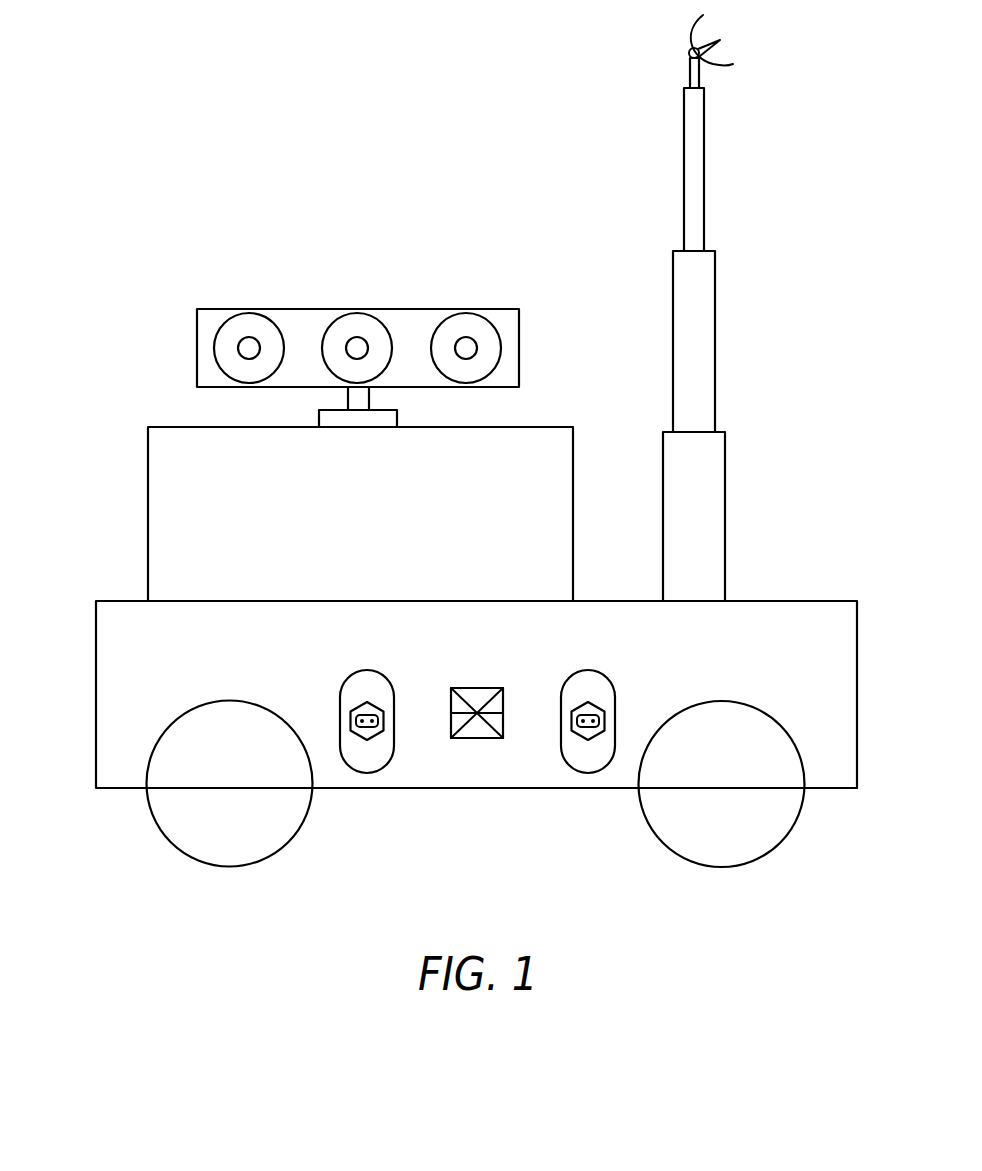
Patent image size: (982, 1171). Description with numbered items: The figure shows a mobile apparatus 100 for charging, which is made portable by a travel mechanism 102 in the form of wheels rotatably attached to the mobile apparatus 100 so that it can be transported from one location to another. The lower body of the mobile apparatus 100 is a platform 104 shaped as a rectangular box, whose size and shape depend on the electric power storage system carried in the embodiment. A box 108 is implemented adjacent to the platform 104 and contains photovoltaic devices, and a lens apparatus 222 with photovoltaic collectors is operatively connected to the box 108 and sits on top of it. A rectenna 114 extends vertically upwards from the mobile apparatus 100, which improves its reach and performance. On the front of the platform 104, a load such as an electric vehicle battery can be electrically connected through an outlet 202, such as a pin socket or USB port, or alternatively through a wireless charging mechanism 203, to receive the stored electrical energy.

The mobile apparatus 100 is at (170, 172).
The travel mechanism 102 is at (148, 813).
The platform 104 is at (95, 695).
The box 108 is at (147, 515).
The rectenna 114 is at (728, 337).
The outlet 202 is at (366, 757).
The wireless charging mechanism 203 is at (477, 728).
The lens apparatus 222 is at (411, 309).